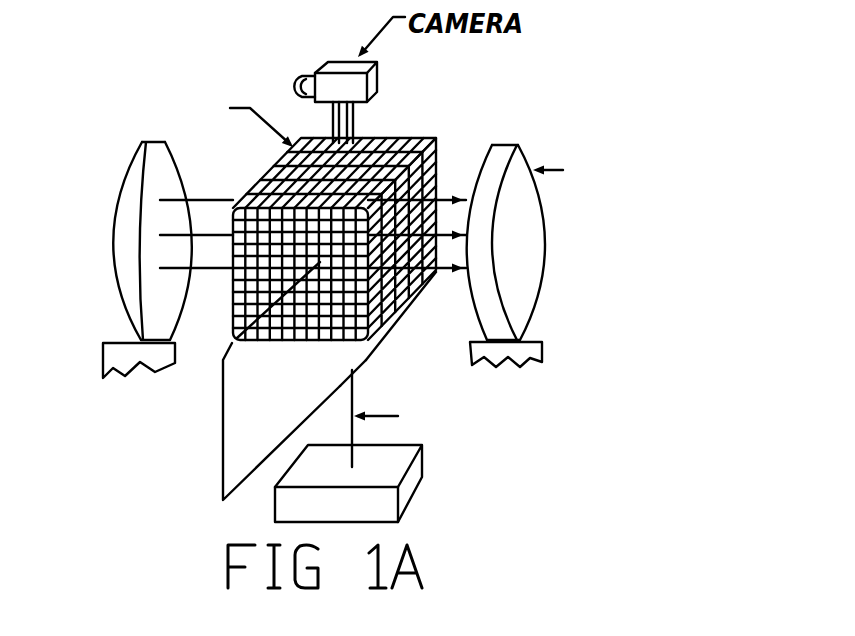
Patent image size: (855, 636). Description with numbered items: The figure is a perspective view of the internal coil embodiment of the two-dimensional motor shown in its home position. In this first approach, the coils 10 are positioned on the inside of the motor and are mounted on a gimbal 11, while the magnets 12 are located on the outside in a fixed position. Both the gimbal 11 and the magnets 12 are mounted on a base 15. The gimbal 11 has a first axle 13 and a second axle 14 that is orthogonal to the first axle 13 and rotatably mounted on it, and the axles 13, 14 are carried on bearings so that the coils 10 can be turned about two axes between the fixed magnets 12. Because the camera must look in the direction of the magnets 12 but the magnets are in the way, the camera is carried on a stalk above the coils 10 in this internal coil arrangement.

The coils 10 is at (398, 141).
The gimbal 11 is at (366, 366).
The magnets 12 is at (120, 245).
The first axle 13 is at (357, 386).
The second axle 14 is at (230, 343).
The base 15 is at (102, 360).